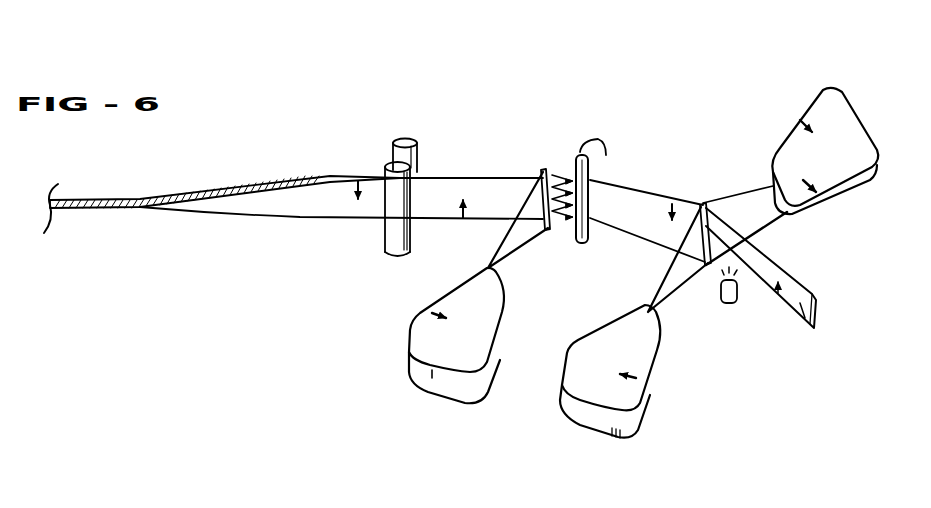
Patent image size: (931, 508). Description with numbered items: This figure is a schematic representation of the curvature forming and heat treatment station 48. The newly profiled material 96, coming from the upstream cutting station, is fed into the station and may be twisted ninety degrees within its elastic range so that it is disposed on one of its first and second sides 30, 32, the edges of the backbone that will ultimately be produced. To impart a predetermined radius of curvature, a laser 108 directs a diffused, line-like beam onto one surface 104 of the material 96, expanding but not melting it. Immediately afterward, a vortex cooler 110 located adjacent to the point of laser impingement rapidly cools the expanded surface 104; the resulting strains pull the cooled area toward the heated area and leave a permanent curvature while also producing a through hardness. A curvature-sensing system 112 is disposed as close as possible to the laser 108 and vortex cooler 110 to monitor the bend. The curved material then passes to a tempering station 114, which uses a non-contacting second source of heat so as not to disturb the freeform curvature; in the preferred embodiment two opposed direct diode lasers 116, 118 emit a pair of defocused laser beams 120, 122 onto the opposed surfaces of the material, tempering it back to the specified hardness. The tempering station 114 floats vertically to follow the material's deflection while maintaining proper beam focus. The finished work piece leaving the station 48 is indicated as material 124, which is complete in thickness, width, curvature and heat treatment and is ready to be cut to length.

The first side 30 is at (138, 208).
The second side 32 is at (240, 217).
The curvature forming and heat treatment station 48 is at (620, 118).
The profiled material 96 is at (220, 181).
The surface 104 is at (490, 202).
The laser 108 is at (410, 282).
The vortex cooler 110 is at (592, 204).
The curvature-sensing system 112 is at (742, 309).
The tempering station 114 is at (700, 312).
The direct diode laser 116 is at (583, 383).
The direct diode laser 118 is at (840, 117).
The defocused laser beam 120 is at (692, 242).
The defocused laser beam 122 is at (728, 208).
The material 124 is at (817, 325).